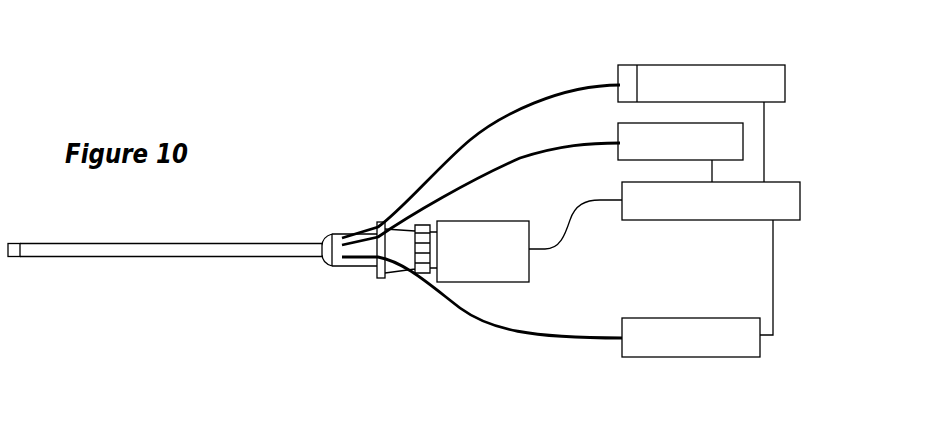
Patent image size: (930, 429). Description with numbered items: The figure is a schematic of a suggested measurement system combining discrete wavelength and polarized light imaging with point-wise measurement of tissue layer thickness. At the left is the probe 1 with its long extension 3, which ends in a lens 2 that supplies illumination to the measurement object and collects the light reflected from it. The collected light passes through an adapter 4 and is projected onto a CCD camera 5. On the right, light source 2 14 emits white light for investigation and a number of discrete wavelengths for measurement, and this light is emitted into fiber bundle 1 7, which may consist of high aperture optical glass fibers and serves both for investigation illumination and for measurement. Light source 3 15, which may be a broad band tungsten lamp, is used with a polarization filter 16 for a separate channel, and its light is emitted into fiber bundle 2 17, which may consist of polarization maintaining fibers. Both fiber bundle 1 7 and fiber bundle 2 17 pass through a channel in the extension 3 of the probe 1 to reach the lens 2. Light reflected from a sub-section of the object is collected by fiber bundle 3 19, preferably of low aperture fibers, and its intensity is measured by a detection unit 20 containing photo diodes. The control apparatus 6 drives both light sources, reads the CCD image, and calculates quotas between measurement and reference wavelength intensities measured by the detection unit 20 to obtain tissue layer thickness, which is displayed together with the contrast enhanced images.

The probe 1 is at (277, 212).
The lens 2 is at (16, 256).
The extension 3 is at (143, 249).
The adapter 4 is at (392, 272).
The CCD camera 5 is at (478, 256).
The control apparatus 6 is at (702, 218).
The fiber bundle 1 7 is at (445, 195).
The light source 2 14 is at (622, 128).
The light source 3 15 is at (718, 70).
The polarization filter 16 is at (632, 70).
The fiber bundle 2 17 is at (505, 105).
The fiber bundle 3 19 is at (498, 328).
The detection unit 20 is at (683, 355).